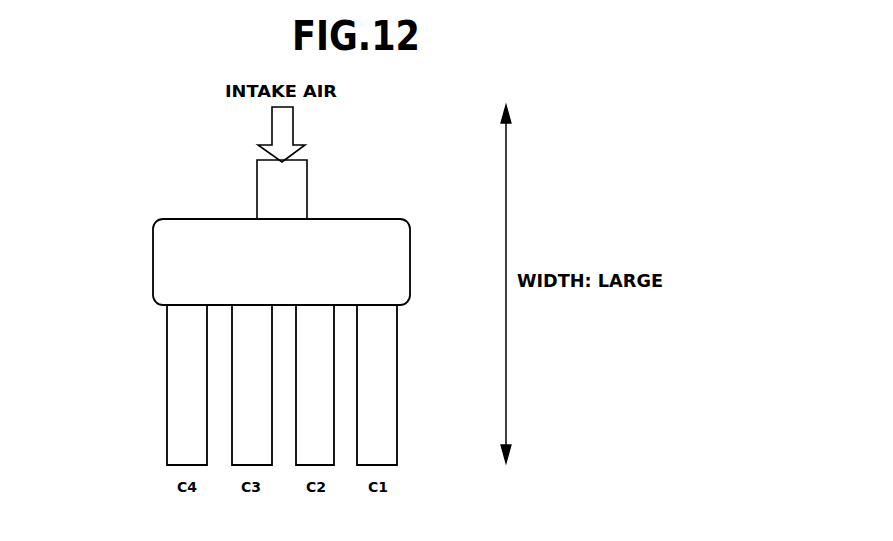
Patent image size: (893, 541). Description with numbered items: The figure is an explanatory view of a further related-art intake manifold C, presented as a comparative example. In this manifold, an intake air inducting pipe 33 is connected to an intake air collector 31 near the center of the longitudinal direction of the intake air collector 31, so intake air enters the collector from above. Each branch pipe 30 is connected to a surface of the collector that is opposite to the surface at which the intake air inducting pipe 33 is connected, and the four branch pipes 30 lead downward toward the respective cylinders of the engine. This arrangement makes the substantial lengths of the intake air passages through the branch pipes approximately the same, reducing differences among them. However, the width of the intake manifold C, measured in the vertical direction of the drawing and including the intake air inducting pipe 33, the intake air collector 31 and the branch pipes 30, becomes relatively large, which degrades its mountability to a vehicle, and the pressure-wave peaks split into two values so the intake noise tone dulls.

The intake manifold C is at (157, 217).
The intake air inducting pipe 33 is at (293, 188).
The intake air collector 31 is at (168, 276).
The branch pipe 30 is at (245, 358).